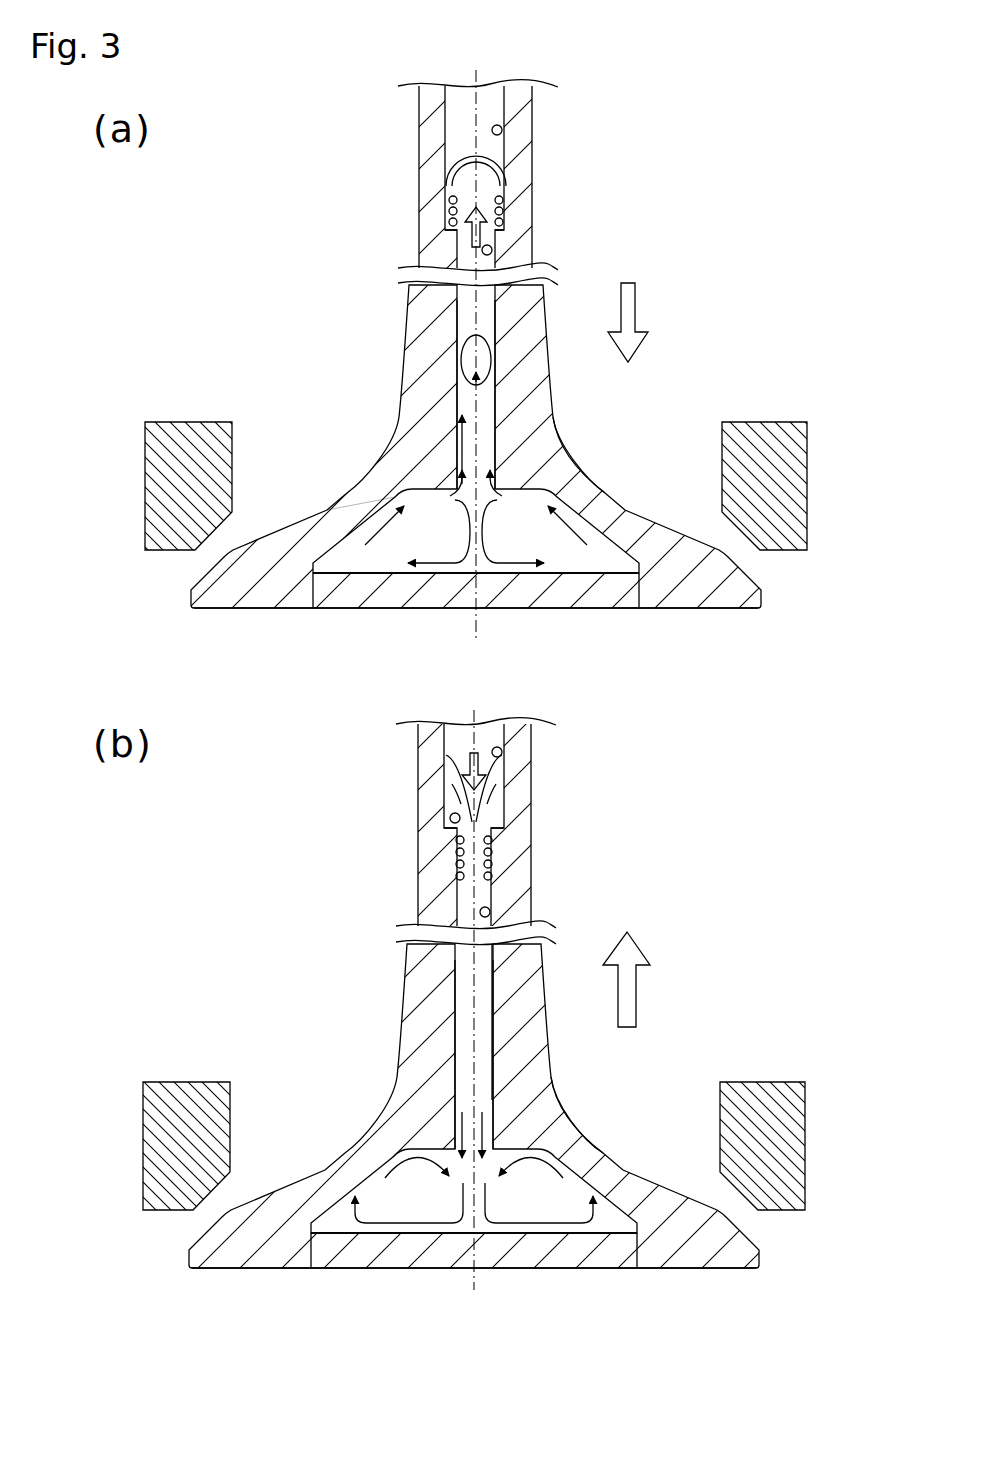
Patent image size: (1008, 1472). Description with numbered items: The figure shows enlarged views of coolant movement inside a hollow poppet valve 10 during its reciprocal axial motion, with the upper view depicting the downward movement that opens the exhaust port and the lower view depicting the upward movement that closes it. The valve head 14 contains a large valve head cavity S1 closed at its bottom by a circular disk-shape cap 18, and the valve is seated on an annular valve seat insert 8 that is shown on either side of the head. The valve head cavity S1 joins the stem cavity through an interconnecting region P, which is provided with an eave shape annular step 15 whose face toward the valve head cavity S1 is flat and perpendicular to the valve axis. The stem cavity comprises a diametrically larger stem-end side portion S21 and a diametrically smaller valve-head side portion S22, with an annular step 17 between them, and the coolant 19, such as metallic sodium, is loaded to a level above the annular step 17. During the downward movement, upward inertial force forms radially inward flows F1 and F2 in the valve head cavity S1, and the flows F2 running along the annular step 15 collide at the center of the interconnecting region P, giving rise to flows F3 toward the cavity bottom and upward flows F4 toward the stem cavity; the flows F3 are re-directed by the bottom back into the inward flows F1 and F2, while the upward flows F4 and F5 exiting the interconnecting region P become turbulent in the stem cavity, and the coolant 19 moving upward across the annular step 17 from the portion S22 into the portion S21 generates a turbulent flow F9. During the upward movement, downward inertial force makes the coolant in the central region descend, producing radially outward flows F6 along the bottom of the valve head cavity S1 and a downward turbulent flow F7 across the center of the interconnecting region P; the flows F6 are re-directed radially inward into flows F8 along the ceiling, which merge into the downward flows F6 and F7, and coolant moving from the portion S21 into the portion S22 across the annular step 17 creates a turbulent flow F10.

The annular valve seat insert 8 is at (779, 545).
The hollow poppet valve 10 is at (383, 324).
The valve head 14 is at (263, 608).
The eave shape annular step 15 is at (557, 447).
The annular step 17 is at (457, 243).
The cap 18 is at (567, 600).
The coolant 19 is at (447, 152).
The interconnecting region P is at (450, 488).
The valve head cavity S1 is at (363, 567).
The stem-end side portion S21 is at (502, 130).
The valve-head side portion S22 is at (492, 250).
The radially inward flow F1 is at (372, 513).
The radially inward flow F2 is at (476, 521).
The flow toward the bottom of the valve head cavity F3 is at (474, 539).
The upward flow F4 is at (476, 455).
The upward flow F5 is at (476, 360).
The radially outward flow F6 is at (474, 1204).
The downward turbulent flow F7 is at (471, 1128).
The flow along the ceiling of the cavity F8 is at (474, 1172).
The turbulent flow F9 is at (508, 202).
The turbulent flow F10 is at (493, 857).